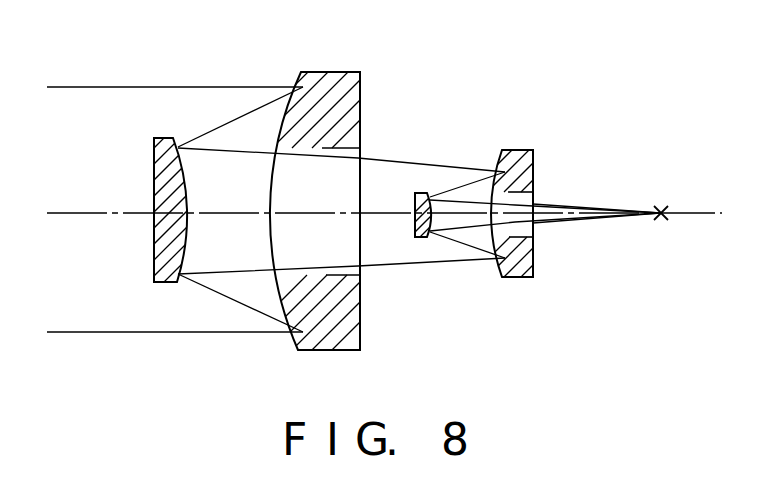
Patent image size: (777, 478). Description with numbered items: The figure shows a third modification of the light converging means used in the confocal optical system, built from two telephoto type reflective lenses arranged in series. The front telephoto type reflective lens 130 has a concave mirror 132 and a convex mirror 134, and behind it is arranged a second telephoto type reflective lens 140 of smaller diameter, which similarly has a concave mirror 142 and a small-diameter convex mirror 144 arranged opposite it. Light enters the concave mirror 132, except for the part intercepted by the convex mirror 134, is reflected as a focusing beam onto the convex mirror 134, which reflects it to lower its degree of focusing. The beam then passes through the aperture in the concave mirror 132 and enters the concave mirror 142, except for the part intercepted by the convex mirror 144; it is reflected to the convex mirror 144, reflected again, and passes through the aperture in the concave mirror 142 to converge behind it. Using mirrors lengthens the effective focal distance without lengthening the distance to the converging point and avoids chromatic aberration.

The telephoto type reflective lens 130 is at (368, 63).
The concave mirror 132 is at (317, 352).
The convex mirror 134 is at (153, 256).
The telephoto type reflective lens 140 is at (547, 68).
The concave mirror 142 is at (516, 279).
The convex mirror 144 is at (423, 238).